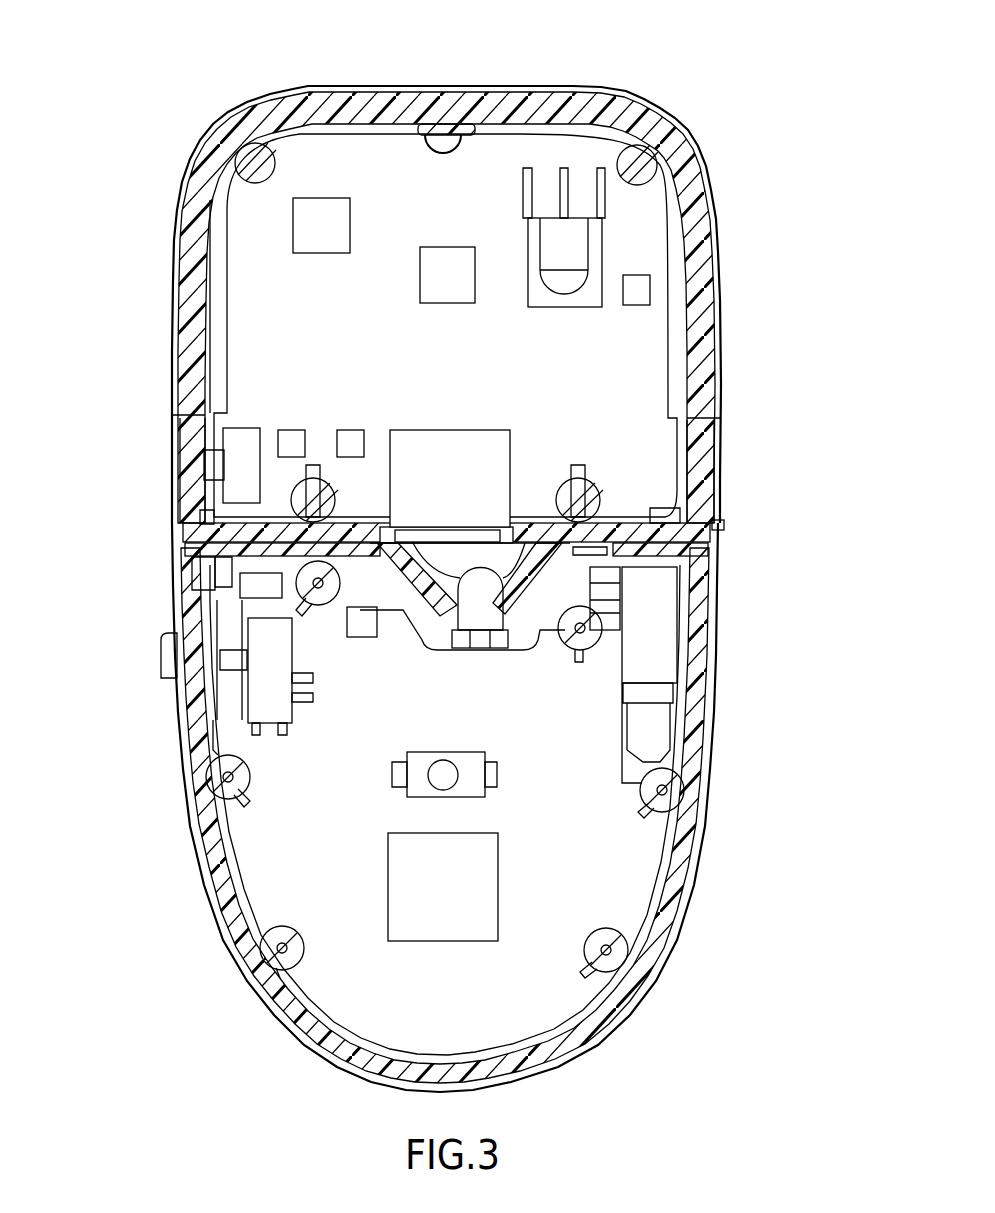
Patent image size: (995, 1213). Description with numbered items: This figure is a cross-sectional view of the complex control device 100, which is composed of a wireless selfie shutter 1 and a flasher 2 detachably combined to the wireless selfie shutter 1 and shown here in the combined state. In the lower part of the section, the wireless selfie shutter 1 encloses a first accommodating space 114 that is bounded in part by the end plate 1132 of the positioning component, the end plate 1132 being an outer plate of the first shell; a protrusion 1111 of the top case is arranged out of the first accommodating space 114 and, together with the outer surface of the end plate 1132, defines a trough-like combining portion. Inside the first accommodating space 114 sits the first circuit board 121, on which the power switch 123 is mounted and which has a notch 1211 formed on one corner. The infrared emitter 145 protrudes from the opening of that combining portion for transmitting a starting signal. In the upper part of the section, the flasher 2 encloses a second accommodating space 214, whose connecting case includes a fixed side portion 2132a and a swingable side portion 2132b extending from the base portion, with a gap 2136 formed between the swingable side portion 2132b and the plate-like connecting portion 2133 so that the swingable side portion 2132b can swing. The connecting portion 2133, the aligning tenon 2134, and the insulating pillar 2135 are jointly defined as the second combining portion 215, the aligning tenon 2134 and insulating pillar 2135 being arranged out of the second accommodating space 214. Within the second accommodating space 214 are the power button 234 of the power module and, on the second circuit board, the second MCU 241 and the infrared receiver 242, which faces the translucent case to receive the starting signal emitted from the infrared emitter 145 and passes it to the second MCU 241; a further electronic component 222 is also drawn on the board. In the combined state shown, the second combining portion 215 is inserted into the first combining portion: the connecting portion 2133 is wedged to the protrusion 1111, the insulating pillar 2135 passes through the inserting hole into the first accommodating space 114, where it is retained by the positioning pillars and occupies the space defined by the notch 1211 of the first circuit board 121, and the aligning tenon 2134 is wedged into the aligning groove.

The complex control device 100 is at (186, 46).
The wireless selfie shutter 1 is at (731, 655).
The flasher 2 is at (728, 266).
The first accommodating space 114 is at (84, 530).
The protrusion 1111 is at (185, 538).
The end plate 1132 is at (190, 563).
The first circuit board 121 is at (441, 770).
The notch 1211 is at (622, 766).
The power switch 123 is at (163, 656).
The infrared emitter 145 is at (478, 598).
The second accommodating space 214 is at (680, 341).
The second combining portion 215 is at (800, 484).
The fixed side portion 2132a is at (710, 466).
The swingable side portion 2132b is at (190, 461).
The connecting portion 2133 is at (624, 508).
The aligning tenon 2134 is at (652, 546).
The insulating pillar 2135 is at (648, 596).
The gap 2136 is at (213, 527).
The electronic component 222 is at (452, 304).
The power button 234 is at (257, 445).
The second MCU 241 is at (636, 298).
The infrared receiver 242 is at (564, 284).